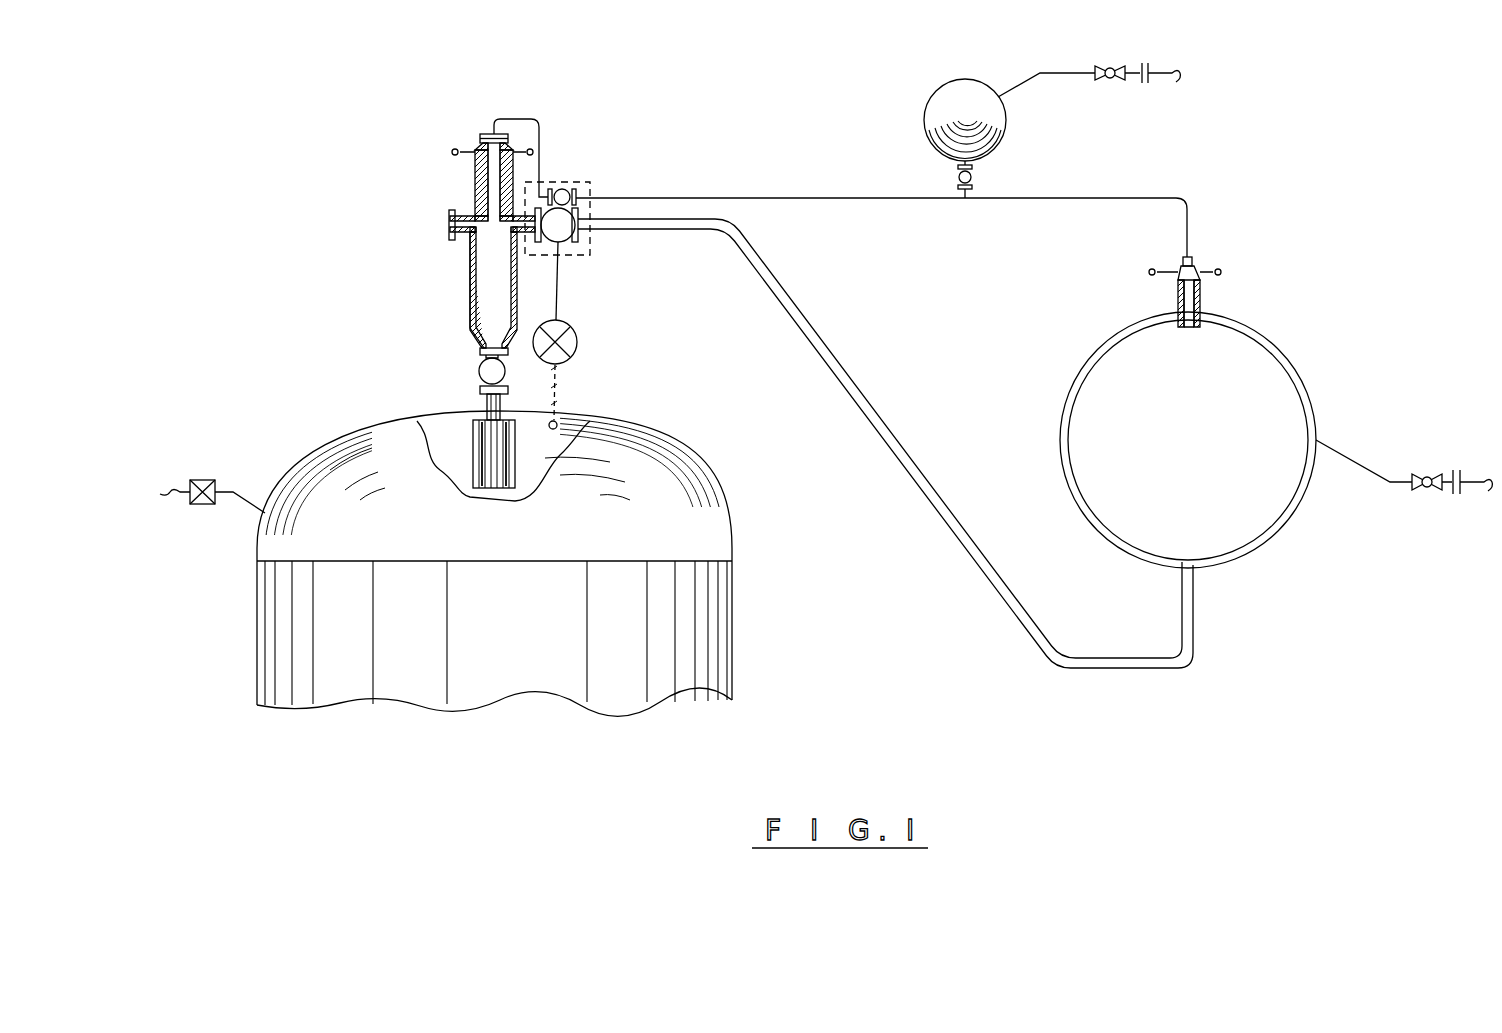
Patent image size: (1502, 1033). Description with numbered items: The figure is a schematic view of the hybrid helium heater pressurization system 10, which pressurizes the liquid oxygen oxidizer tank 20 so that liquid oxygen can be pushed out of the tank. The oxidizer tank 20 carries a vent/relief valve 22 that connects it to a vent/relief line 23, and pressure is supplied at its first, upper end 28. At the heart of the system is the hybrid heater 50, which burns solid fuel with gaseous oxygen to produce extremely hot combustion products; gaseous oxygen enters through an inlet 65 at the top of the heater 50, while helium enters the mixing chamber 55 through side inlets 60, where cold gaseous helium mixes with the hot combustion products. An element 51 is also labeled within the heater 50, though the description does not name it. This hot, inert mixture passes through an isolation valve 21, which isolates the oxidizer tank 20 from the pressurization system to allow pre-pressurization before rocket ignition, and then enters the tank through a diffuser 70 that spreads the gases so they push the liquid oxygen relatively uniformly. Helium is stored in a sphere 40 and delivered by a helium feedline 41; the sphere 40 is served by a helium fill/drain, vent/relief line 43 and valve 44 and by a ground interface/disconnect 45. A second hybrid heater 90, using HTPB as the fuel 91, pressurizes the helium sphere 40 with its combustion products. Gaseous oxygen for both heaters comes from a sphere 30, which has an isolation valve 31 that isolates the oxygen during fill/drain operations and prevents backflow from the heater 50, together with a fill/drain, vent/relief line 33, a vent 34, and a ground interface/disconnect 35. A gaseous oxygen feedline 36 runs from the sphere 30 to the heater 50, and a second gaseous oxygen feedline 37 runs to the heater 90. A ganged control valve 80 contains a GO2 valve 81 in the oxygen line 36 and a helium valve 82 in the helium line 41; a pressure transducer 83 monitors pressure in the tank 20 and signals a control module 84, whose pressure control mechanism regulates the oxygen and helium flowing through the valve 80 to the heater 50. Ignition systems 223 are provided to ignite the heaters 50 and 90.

The hybrid helium heater pressurization system 10 is at (821, 619).
The oxidizer tank 20 is at (638, 462).
The isolation valve 21 is at (480, 366).
The vent/relief valve 22 is at (205, 480).
The vent/relief line 23 is at (245, 510).
The first, upper end 28 is at (455, 412).
The sphere 30 is at (950, 85).
The isolation valve 31 is at (975, 176).
The GO2 fill/drain, vent/relief line 33 is at (1017, 85).
The GO2 fill/drain, vent/relief vent 34 is at (1105, 80).
The ground interface/disconnect 35 is at (1158, 65).
The gaseous oxygen feedline 36 is at (738, 197).
The gaseous oxygen feedline 37 is at (1172, 195).
The sphere 40 is at (1262, 375).
The helium feedline 41 is at (1193, 617).
The helium fill/drain, vent/relief line 43 is at (1350, 455).
The helium fill/drain, vent/relief valve 44 is at (1420, 490).
The ground interface/disconnect 45 is at (1455, 470).
The hybrid heater 50 is at (475, 180).
The bore 51 is at (477, 197).
The mixing chamber 55 is at (468, 287).
The inlet 60 is at (450, 226).
The inlet 65 is at (486, 133).
The diffuser 70 is at (471, 455).
The ganged control valve 80 is at (586, 182).
The GO2 valve 81 is at (563, 189).
The helium valve 82 is at (568, 225).
The pressure transducer 83 is at (575, 425).
The control module 84 is at (577, 343).
The hybrid heater 90 is at (1200, 300).
The fuel 91 is at (1178, 300).
The ignition system 223 is at (437, 120).